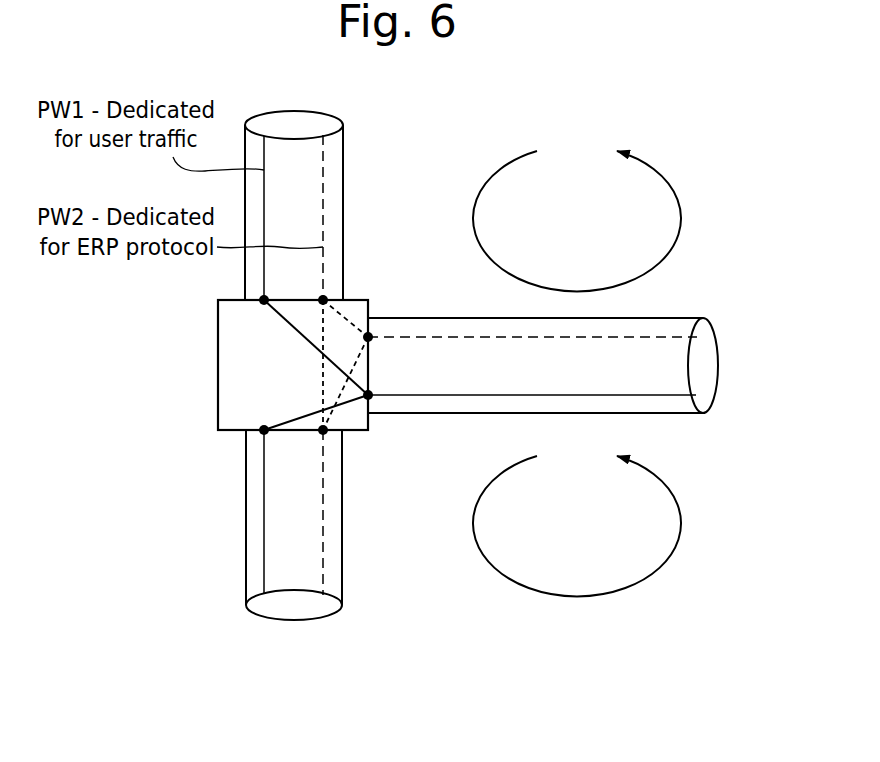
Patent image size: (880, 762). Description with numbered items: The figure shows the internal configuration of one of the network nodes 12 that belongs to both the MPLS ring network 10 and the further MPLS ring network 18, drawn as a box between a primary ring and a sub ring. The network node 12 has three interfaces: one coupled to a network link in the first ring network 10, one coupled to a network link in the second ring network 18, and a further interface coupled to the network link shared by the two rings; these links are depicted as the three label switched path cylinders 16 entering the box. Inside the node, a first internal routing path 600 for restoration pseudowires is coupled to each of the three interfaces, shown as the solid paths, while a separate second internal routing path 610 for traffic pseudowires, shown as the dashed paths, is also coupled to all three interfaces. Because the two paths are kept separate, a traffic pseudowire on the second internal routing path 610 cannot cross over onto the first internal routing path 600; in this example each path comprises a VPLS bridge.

The MPLS ring network 10 is at (704, 156).
The network node 12 is at (218, 418).
The label switched path (LSP) 16 is at (343, 173).
The further MPLS ring network 18 is at (706, 606).
The first internal routing path 600 is at (307, 410).
The second internal routing path 610 is at (328, 337).